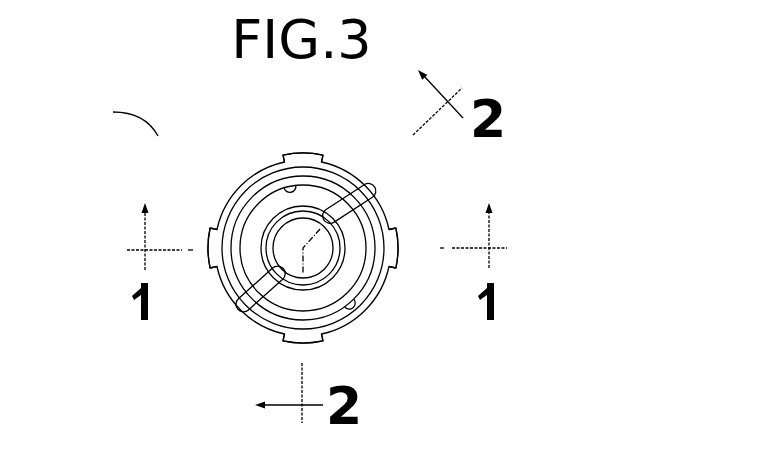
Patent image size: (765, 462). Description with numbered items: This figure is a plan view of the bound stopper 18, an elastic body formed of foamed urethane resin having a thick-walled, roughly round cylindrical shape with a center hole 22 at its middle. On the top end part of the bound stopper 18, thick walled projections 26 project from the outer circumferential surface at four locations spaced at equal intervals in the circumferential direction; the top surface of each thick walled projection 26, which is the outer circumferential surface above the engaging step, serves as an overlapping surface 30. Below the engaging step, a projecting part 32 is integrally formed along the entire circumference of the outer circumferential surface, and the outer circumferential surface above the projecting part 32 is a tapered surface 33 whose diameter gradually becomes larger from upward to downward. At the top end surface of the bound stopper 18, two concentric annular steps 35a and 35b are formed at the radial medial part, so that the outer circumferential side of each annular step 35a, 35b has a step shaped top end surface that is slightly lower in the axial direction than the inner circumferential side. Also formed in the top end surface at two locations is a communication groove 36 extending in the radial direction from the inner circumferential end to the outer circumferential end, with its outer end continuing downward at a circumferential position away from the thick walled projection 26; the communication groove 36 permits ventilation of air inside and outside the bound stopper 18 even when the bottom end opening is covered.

The bound stopper 18 is at (122, 117).
The center hole 22 is at (292, 234).
The thick walled projection 26 is at (291, 151).
The overlapping surface 30 is at (312, 162).
The projecting part 32 is at (386, 190).
The tapered surface 33 is at (224, 292).
The annular step 35a is at (286, 188).
The annular step 35b is at (356, 306).
The communication groove 36 is at (352, 200).